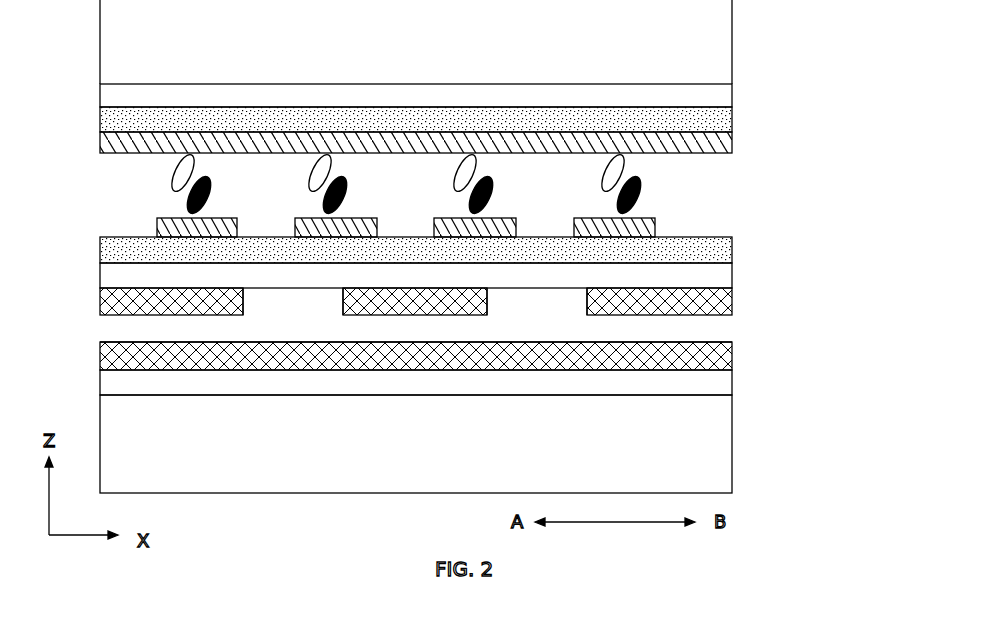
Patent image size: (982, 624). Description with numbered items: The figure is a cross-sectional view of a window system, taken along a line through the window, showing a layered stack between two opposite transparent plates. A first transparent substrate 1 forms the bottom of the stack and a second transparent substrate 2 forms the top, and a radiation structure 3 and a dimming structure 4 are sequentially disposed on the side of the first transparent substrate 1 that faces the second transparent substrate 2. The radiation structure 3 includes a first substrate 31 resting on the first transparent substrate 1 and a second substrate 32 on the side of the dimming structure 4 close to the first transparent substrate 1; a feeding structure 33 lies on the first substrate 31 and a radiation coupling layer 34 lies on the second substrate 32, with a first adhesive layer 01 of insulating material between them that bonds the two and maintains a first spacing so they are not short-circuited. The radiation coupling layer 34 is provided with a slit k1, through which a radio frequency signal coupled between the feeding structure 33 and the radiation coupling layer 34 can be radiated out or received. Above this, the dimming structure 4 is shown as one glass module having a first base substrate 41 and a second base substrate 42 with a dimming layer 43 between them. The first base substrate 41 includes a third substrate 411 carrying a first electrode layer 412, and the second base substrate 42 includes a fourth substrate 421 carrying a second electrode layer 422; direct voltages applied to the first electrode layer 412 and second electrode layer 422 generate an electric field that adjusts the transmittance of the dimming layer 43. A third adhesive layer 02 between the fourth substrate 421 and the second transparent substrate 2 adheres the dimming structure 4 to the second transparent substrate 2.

The first transparent substrate 1 is at (676, 458).
The second transparent substrate 2 is at (713, 38).
The third adhesive layer 02 is at (715, 94).
The dimming structure 4 is at (488, 185).
The second base substrate 42 is at (465, 131).
The fourth substrate 421 is at (700, 122).
The second electrode layer 422 is at (700, 146).
The dimming layer 43 is at (642, 190).
The first base substrate 41 is at (465, 239).
The first electrode layer 412 is at (655, 226).
The third substrate 411 is at (465, 250).
The radiation structure 3 is at (472, 329).
The second substrate 32 is at (713, 273).
The radiation coupling layer 34 is at (720, 299).
The slit k1 is at (295, 303).
The first adhesive layer 01 is at (720, 325).
The feeding structure 33 is at (715, 353).
The first substrate 31 is at (441, 381).